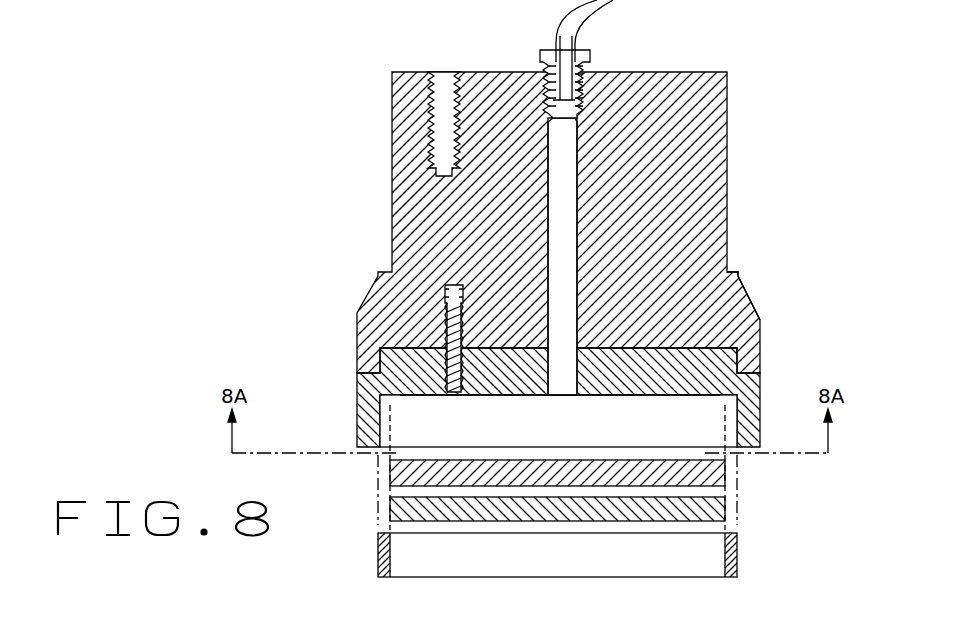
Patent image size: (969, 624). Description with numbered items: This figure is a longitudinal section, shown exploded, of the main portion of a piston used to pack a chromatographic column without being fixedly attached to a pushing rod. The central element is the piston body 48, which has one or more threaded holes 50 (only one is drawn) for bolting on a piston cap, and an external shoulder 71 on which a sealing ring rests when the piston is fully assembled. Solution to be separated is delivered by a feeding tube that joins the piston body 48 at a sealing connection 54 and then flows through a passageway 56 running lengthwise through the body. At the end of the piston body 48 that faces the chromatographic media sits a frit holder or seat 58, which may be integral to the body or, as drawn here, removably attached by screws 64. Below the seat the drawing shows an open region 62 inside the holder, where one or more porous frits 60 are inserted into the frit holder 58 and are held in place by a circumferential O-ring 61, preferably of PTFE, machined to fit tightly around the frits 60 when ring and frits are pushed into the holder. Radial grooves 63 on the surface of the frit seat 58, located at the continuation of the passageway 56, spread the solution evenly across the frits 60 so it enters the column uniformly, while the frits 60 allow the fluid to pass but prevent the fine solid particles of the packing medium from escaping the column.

The piston body 48 is at (395, 228).
The threaded hole 50 is at (445, 92).
The sealing connection 54 is at (576, 62).
The passageway 56 is at (560, 160).
The frit holder 58 is at (368, 391).
The porous frit 60 is at (390, 506).
The circumferential O-ring 61 is at (378, 548).
The cavity 62 is at (703, 429).
The radial groove 63 is at (502, 396).
The screw 64 is at (448, 325).
The shoulder 71 is at (738, 274).